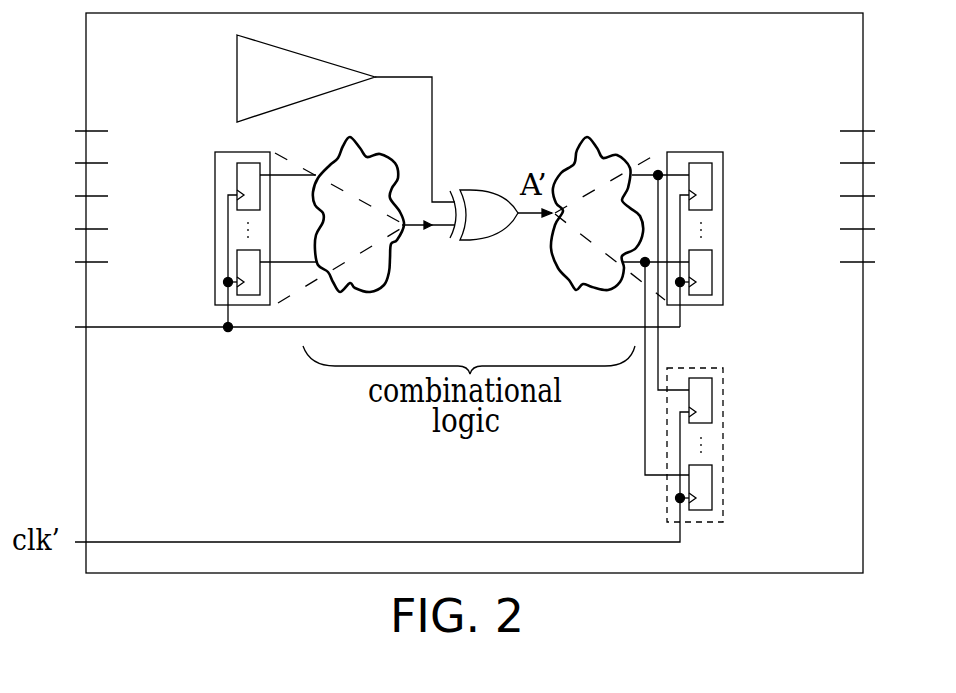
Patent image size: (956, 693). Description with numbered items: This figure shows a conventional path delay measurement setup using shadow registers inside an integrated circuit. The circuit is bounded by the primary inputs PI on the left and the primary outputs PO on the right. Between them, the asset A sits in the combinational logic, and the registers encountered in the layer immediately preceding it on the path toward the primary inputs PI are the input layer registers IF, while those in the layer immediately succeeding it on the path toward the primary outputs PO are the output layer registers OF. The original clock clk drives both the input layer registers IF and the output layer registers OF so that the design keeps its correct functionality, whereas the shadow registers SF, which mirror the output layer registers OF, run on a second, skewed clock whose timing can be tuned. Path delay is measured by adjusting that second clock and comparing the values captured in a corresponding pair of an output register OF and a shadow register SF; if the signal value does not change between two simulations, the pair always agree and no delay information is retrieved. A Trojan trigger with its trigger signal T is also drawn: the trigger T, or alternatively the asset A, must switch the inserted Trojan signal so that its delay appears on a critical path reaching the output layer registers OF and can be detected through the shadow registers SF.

The primary inputs PI is at (65, 196).
The primary outputs PO is at (884, 196).
The element trigger is at (306, 78).
The trigger signal T is at (415, 119).
The input layer registers IF is at (239, 228).
The output layer registers OF is at (705, 228).
The shadow registers SF is at (728, 445).
The clock clk is at (350, 269).
The asset A is at (428, 250).